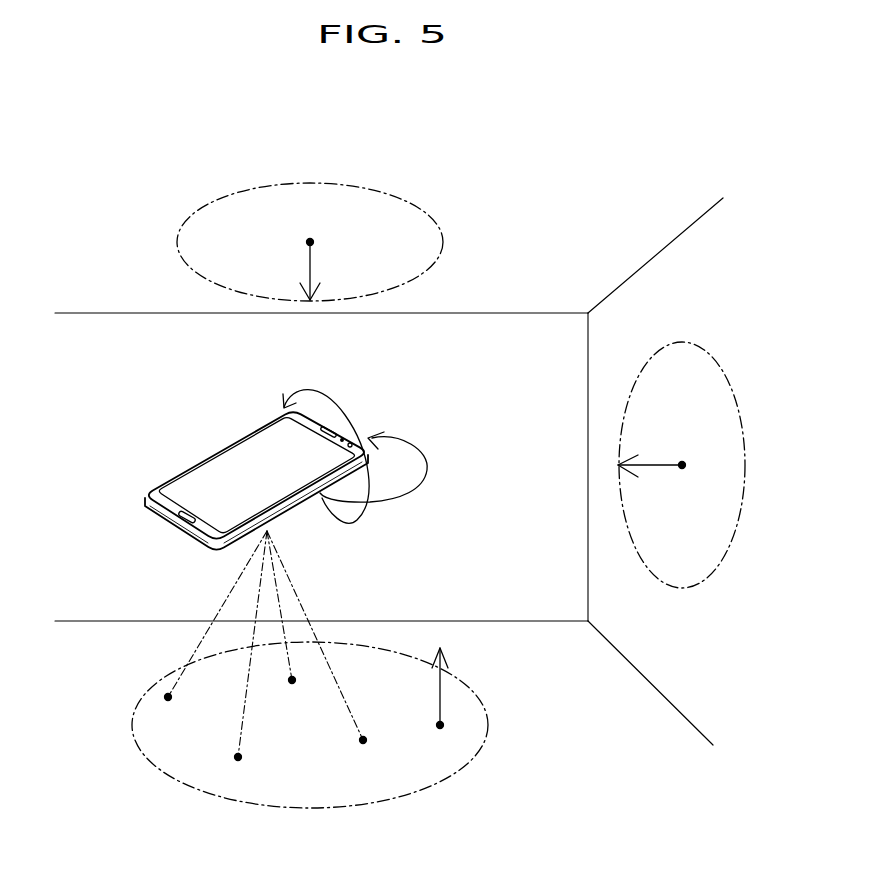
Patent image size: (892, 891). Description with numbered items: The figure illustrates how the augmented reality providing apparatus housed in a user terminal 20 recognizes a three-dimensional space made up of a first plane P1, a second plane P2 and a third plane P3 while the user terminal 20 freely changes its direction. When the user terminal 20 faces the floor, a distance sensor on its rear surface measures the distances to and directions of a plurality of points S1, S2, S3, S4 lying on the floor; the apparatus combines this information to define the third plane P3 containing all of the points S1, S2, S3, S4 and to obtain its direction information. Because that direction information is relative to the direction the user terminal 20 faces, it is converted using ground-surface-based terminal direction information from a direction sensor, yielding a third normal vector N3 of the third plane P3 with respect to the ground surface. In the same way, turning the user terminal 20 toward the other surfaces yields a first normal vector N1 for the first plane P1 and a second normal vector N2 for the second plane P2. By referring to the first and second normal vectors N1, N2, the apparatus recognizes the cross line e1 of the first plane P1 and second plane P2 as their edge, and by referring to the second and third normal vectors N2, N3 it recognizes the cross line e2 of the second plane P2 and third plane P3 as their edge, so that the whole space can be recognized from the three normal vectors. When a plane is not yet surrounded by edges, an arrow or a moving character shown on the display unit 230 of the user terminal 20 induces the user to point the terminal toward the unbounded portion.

The user terminal 20 is at (143, 497).
The display unit 230 is at (218, 455).
The first plane P1 is at (343, 183).
The second plane P2 is at (732, 388).
The third plane P3 is at (437, 783).
The first normal vector N1 is at (313, 266).
The second normal vector N2 is at (652, 462).
The third normal vector N3 is at (441, 686).
The cross line e1 is at (655, 252).
The cross line e2 is at (650, 685).
The point S1 is at (168, 697).
The point S2 is at (238, 757).
The point S3 is at (292, 680).
The point S4 is at (363, 740).